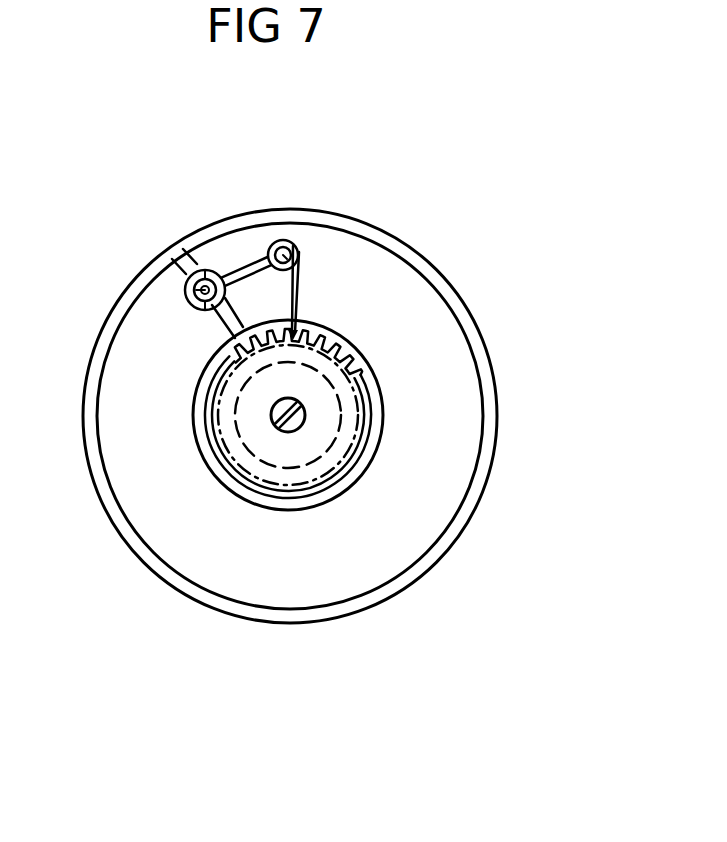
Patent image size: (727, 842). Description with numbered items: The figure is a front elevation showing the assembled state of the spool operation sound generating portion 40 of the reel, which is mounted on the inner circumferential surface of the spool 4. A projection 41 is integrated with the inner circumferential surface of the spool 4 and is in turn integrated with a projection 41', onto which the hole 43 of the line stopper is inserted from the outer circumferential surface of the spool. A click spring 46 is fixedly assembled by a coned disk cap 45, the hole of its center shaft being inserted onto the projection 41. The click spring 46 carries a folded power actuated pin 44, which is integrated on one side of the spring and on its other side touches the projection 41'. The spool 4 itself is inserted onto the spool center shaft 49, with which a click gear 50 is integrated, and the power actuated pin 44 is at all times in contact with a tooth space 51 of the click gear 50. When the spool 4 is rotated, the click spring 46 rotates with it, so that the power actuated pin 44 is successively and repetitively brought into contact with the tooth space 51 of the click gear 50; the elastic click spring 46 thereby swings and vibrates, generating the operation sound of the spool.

The spool operation sound generating portion 40 is at (520, 261).
The spool 4 is at (432, 253).
The projection 41 is at (272, 208).
The projection 41' is at (129, 275).
The hole of line stopper 43 is at (169, 245).
The folded power actuated pin 44 is at (301, 320).
The coned disk cap 45 is at (188, 305).
The click spring 46 is at (235, 270).
The spool center shaft 49 is at (273, 427).
The click gear 50 is at (372, 397).
The tooth space of the click gear 51 is at (337, 337).